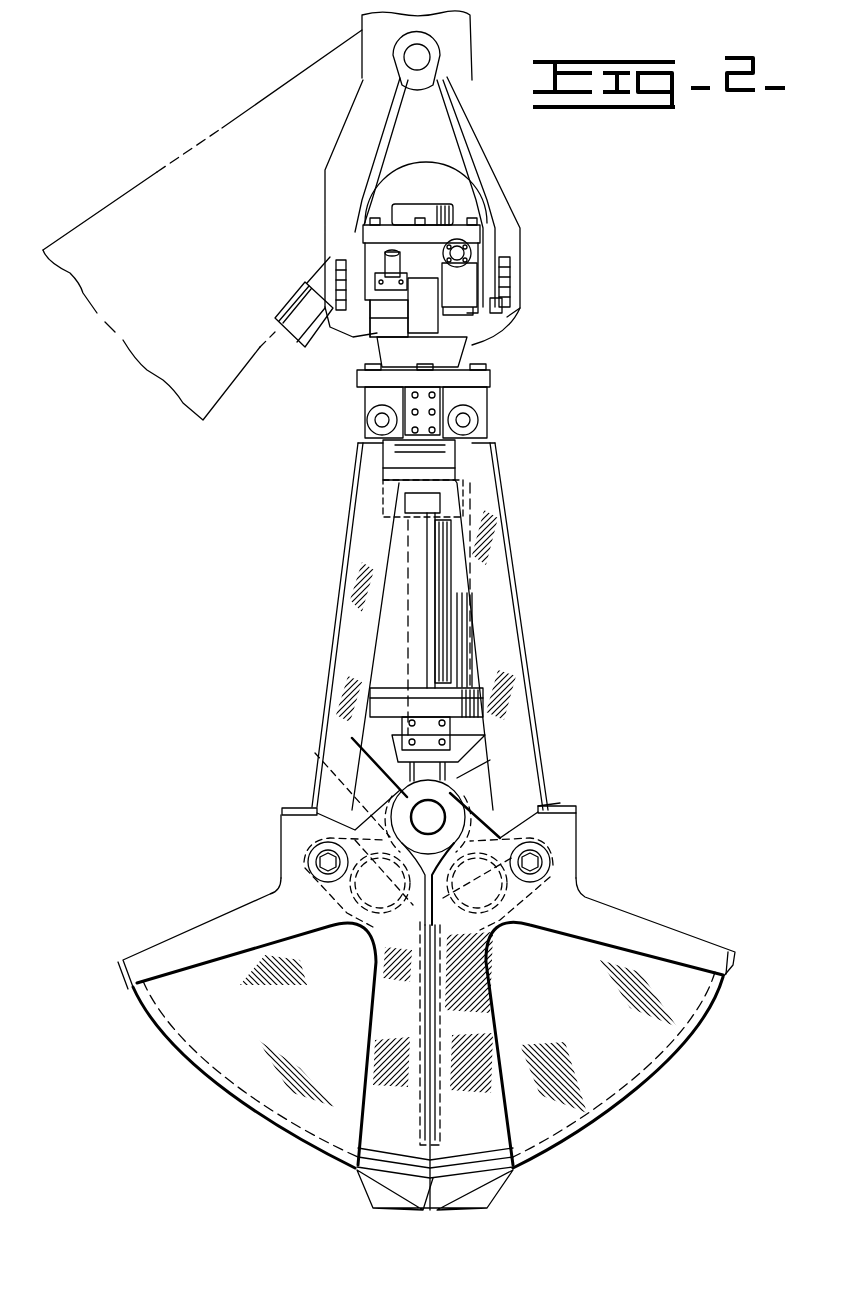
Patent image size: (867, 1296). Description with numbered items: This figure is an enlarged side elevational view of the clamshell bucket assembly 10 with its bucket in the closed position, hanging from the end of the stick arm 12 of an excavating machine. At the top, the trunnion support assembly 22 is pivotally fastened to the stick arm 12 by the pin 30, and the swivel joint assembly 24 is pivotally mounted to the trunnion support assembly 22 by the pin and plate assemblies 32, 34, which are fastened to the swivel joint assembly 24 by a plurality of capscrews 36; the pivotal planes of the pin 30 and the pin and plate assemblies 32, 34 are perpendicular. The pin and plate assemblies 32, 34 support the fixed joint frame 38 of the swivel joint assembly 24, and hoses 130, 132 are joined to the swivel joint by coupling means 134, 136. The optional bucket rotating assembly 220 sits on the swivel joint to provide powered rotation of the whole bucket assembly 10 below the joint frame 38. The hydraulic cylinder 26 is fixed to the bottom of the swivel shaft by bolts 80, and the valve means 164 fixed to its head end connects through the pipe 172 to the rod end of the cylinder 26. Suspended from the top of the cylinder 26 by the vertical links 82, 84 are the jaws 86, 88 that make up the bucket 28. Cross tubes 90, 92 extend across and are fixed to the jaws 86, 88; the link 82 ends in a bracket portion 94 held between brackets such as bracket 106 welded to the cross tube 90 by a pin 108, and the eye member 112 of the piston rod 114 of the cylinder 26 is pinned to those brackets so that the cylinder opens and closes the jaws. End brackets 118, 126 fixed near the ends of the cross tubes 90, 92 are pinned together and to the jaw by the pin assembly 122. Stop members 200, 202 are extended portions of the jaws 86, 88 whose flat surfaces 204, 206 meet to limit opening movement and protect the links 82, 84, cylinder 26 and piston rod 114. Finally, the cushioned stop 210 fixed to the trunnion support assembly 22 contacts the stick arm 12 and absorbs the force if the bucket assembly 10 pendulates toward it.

The clamshell bucket assembly 10 is at (551, 458).
The stick arm 12 is at (218, 131).
The trunnion support assembly 22 is at (521, 227).
The swivel joint assembly 24 is at (489, 323).
The hydraulic cylinder 26 is at (463, 653).
The bucket 28 is at (683, 912).
The pin 30 is at (432, 57).
The pin and plate assembly 32 is at (332, 308).
The pin and plate assembly 34 is at (505, 311).
The capscrews 36 is at (336, 272).
The fixed joint frame 38 is at (365, 376).
The bolts 80 is at (458, 367).
The vertical link 82 is at (500, 607).
The vertical link 84 is at (346, 596).
The jaw 86 is at (584, 1045).
The jaw 88 is at (272, 1045).
The cross tube 90 is at (480, 933).
The cross tube 92 is at (378, 933).
The bracket portion 94 is at (551, 862).
The bracket 106 is at (516, 900).
The pin 108 is at (542, 866).
The eye member 112 is at (493, 806).
The piston rod 114 is at (460, 783).
The end bracket 118 is at (560, 803).
The pin assembly 122 is at (423, 806).
The end bracket 126 is at (315, 753).
The hose 130 is at (386, 263).
The hose 132 is at (471, 255).
The coupling means 134 is at (376, 350).
The coupling means 136 is at (485, 325).
The valve means 164 is at (427, 472).
The pipe 172 is at (424, 540).
The stop member 200 is at (578, 831).
The stop member 202 is at (282, 812).
The flat surface 204 is at (580, 806).
The flat surface 206 is at (288, 806).
The cushioned stop 210 is at (281, 332).
The bucket rotating assembly 220 is at (455, 211).